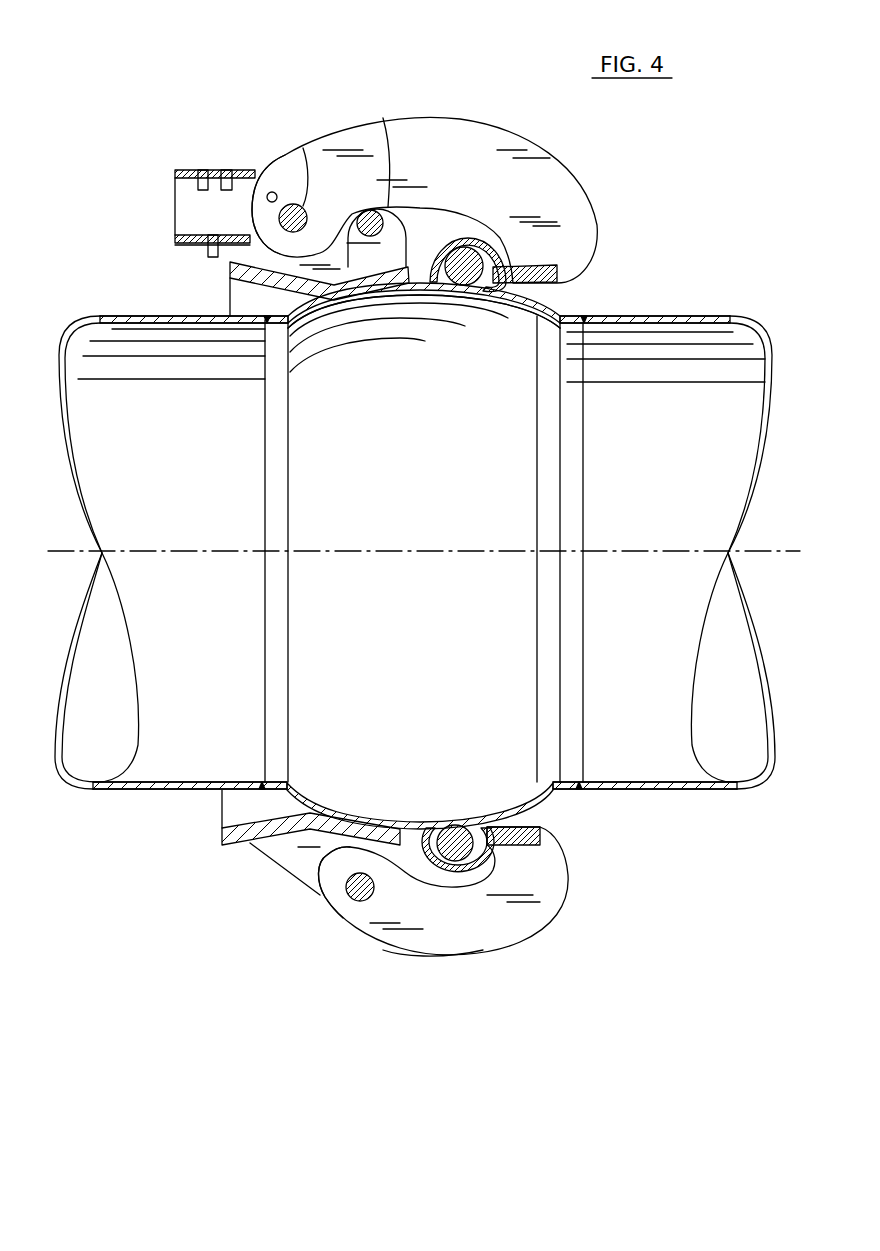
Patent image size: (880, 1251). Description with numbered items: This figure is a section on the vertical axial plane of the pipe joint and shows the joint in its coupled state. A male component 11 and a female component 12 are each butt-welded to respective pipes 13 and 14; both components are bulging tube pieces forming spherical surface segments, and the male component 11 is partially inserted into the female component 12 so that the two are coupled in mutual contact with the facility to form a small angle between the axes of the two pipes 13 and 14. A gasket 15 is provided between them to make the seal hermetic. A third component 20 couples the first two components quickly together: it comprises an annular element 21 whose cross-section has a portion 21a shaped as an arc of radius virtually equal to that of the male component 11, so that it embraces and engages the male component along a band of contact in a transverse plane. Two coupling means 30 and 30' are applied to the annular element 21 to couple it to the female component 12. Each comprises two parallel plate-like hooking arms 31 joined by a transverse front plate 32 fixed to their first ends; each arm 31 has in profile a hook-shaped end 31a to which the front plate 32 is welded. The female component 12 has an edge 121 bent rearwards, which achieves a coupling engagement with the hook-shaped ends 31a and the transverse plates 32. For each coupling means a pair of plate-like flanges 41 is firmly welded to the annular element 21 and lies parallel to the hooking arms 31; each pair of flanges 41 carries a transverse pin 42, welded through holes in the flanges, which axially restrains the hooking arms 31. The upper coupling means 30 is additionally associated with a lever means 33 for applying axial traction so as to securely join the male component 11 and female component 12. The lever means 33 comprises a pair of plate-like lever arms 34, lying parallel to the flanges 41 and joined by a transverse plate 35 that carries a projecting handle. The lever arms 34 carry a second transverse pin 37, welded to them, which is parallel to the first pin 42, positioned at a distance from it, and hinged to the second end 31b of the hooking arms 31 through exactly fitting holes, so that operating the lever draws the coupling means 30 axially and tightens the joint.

The male component 11 is at (222, 805).
The female component 12 is at (567, 313).
The pipe 13 is at (96, 790).
The pipe 14 is at (740, 316).
The gasket 15 is at (463, 297).
The third component 20 is at (278, 160).
The annular element 21 is at (228, 290).
The arc-shaped portion 21a is at (366, 815).
The coupling means 30 is at (444, 519).
The coupling means 30' is at (433, 1017).
The hooking arm 31 is at (383, 116).
The hook-shaped end 31a is at (530, 257).
The second end 31b is at (258, 182).
The transverse front plate 32 is at (527, 298).
The lever means 33 is at (160, 184).
The lever arm 34 is at (357, 297).
The transverse plate 35 is at (173, 168).
The second transverse pin 37 is at (304, 205).
The flange 41 is at (434, 208).
The transverse pin 42 is at (383, 266).
The bent edge 121 is at (465, 236).